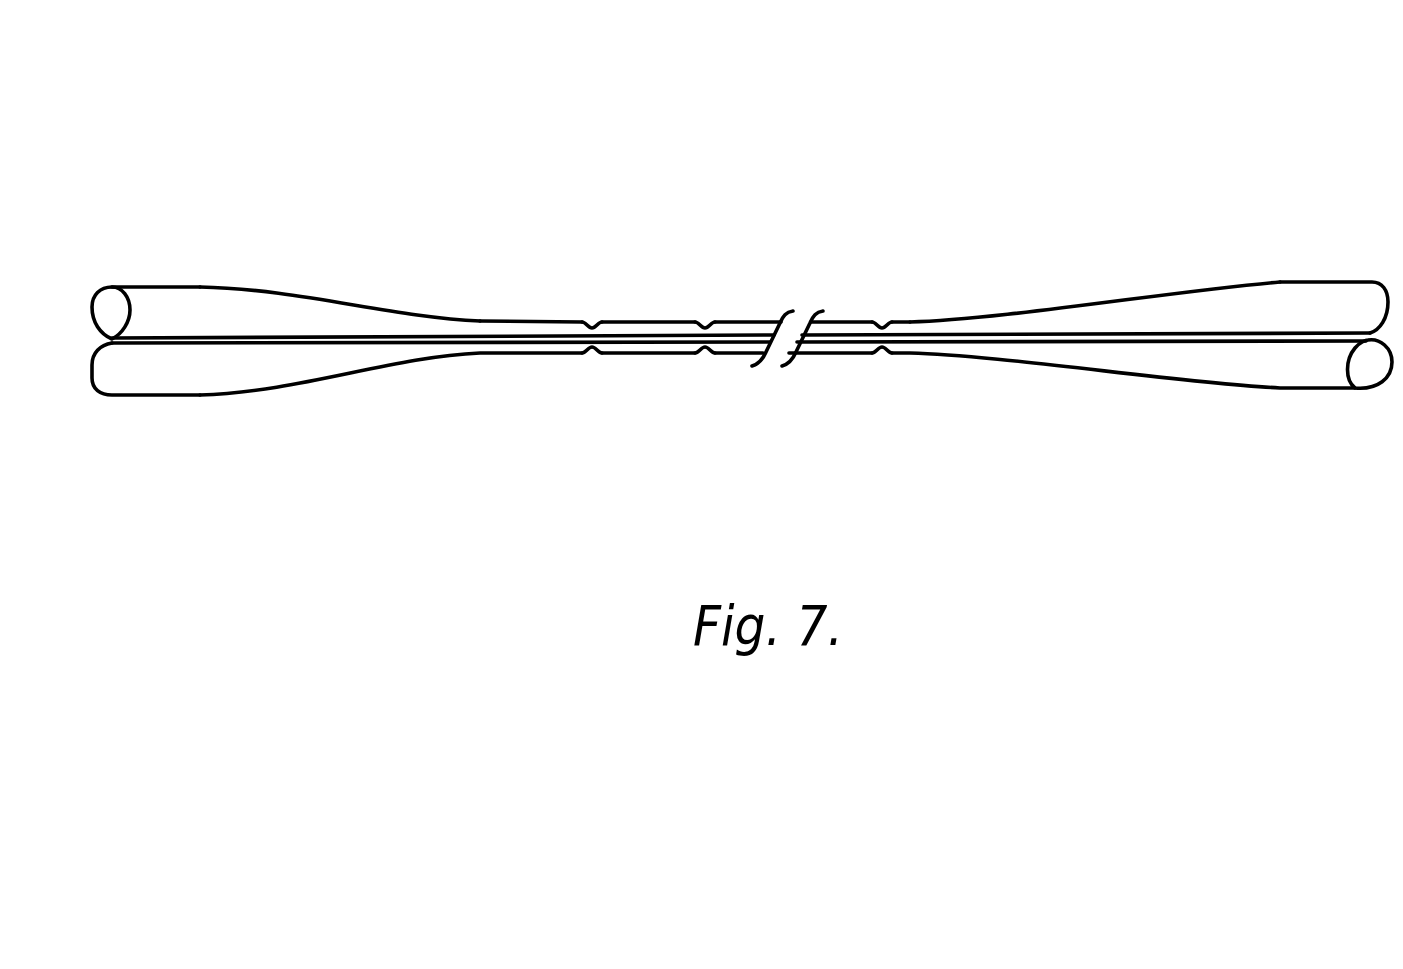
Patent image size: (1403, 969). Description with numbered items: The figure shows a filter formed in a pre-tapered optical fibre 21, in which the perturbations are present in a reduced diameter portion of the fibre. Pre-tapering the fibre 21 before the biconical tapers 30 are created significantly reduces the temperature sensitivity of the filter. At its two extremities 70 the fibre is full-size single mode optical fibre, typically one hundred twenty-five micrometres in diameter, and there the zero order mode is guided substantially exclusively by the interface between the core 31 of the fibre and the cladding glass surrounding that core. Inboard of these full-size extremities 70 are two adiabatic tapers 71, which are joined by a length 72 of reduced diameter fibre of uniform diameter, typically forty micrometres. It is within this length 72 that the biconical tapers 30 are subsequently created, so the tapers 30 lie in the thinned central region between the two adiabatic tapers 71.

The fibre 21 is at (1112, 408).
The biconical tapers 30 is at (592, 320).
The core 31 is at (217, 340).
The extremities 70 is at (158, 285).
The adiabatic tapers 71 is at (297, 293).
The length of reduced diameter fibre 72 is at (530, 320).